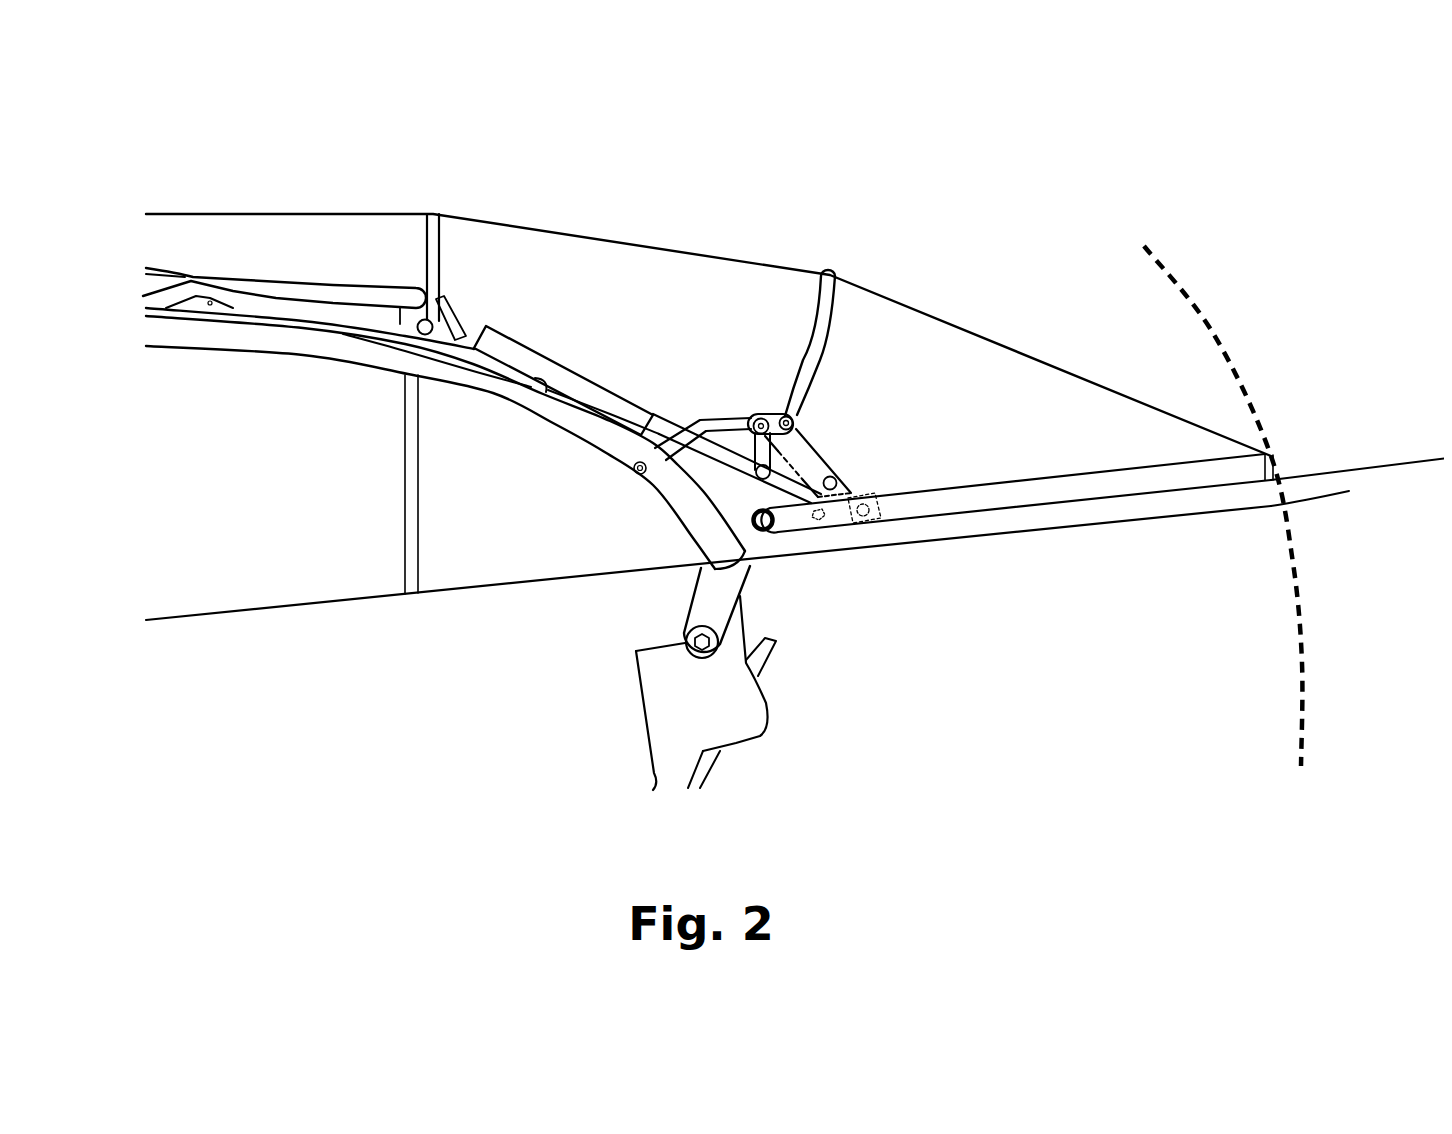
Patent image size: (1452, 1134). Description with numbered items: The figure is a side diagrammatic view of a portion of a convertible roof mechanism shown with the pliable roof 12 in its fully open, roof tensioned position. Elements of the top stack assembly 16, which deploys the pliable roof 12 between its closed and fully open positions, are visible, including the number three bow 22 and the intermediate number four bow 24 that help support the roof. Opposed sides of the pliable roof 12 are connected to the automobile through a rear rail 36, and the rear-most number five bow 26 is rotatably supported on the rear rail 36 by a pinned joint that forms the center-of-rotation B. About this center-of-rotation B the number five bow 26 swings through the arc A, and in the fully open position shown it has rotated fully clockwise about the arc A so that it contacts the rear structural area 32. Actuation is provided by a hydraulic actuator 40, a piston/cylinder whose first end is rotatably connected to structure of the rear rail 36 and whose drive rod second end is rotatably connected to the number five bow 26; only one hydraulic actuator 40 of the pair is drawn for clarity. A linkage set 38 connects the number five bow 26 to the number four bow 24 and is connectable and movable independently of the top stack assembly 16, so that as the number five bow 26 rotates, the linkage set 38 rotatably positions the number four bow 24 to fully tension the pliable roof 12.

The pliable roof 12 is at (632, 241).
The top stack assembly 16 is at (238, 275).
The number three bow 22 is at (432, 210).
The number four bow 24 is at (830, 270).
The number five bow 26 is at (998, 493).
The rear structural area 32 is at (1368, 466).
The rear rail 36 is at (565, 422).
The linkage set 38 is at (810, 452).
The hydraulic actuator 40 is at (614, 390).
The arc A is at (1209, 327).
The center-of-rotation B is at (775, 525).